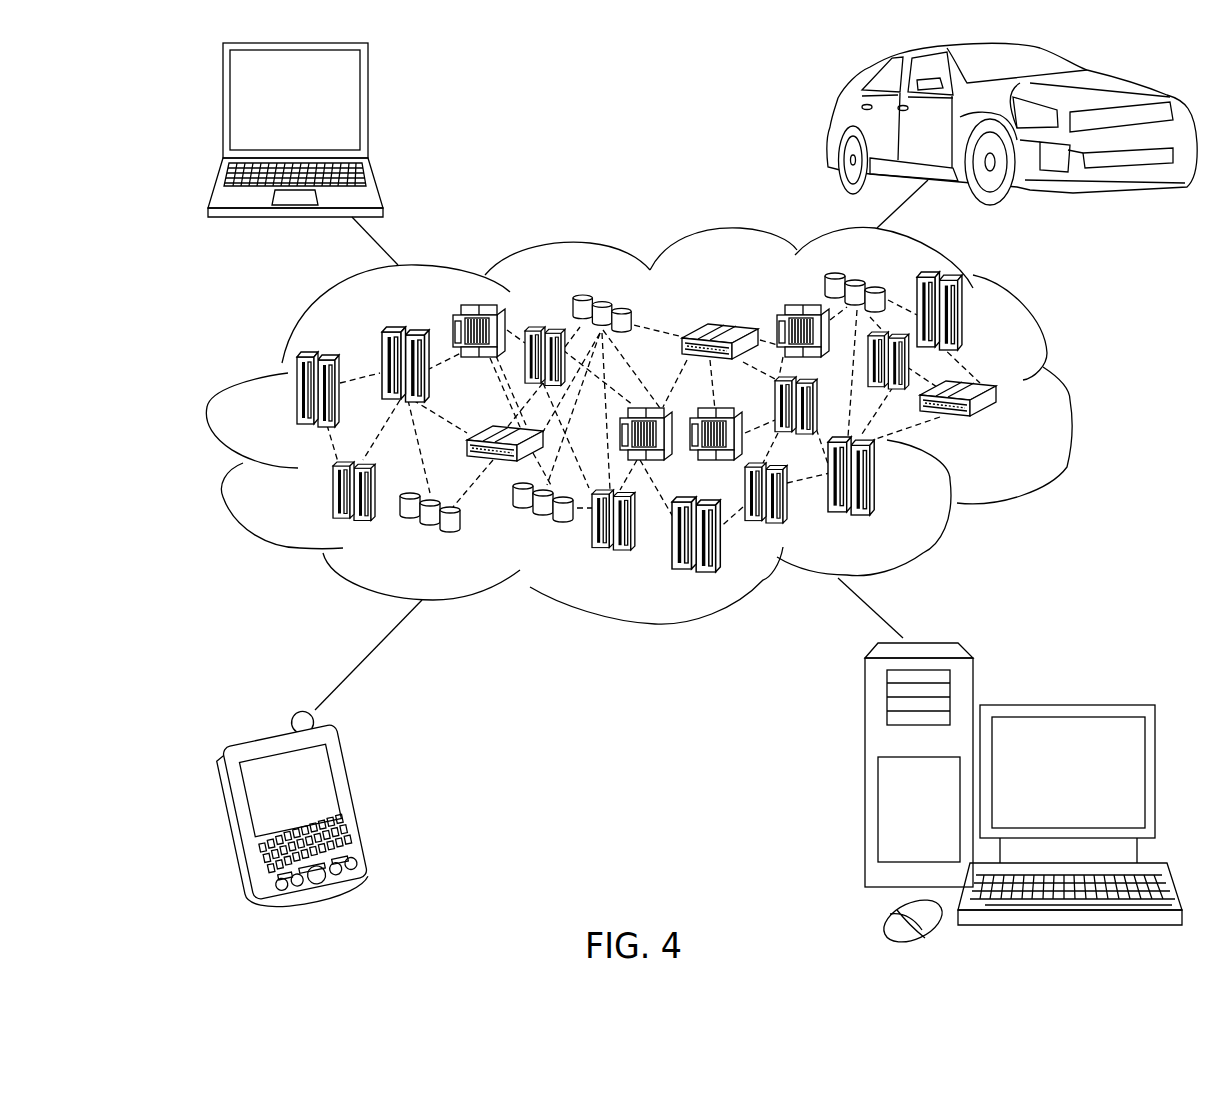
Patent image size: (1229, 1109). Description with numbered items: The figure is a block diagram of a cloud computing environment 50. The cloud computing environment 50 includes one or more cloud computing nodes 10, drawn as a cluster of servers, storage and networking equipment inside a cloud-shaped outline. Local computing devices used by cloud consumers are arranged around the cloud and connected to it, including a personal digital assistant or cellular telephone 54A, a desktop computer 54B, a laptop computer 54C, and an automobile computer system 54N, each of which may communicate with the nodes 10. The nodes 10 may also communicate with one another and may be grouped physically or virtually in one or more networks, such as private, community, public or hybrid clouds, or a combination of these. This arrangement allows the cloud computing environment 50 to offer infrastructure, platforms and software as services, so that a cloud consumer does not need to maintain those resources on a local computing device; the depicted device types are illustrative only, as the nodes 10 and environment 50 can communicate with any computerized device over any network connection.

The cloud computing nodes 10 is at (1003, 430).
The cloud computing environment 50 is at (1066, 399).
The personal digital assistant (PDA) or cellular telephone 54A is at (357, 803).
The desktop computer 54B is at (1063, 705).
The laptop computer 54C is at (368, 108).
The automobile computer system 54N is at (835, 127).